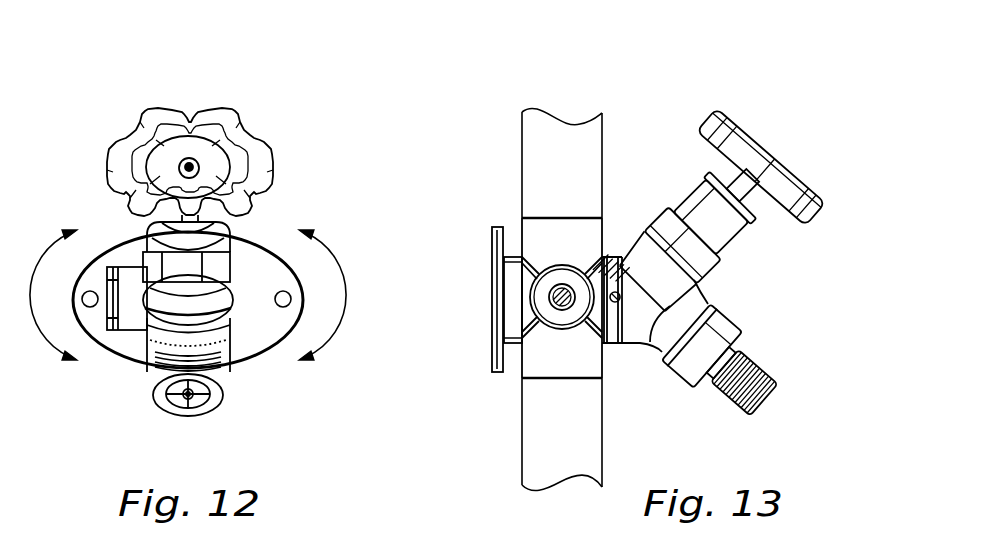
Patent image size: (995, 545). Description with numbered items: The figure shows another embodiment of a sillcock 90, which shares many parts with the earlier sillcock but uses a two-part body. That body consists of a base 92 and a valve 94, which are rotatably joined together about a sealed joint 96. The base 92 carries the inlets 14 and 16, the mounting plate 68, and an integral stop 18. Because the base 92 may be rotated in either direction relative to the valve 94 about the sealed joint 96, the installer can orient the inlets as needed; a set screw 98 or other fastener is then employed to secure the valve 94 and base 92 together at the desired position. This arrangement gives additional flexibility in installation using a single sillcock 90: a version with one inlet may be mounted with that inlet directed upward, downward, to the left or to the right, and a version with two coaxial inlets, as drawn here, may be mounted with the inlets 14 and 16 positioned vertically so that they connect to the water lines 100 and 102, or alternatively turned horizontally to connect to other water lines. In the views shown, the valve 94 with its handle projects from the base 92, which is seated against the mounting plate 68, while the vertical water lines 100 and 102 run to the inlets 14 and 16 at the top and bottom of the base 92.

In FIG. 12, the sillcock 90 is at (344, 86).
In FIG. 13, the sillcock 90 is at (746, 55).
In FIG. 12, the valve 94 is at (300, 177).
In FIG. 13, the valve 94 is at (817, 258).
In FIG. 12, the integral stop 18 is at (120, 240).
In FIG. 13, the integral stop 18 is at (533, 239).
In FIG. 12, the mounting plate 68 is at (247, 348).
In FIG. 13, the mounting plate 68 is at (495, 243).
In FIG. 12, the base 92 is at (91, 384).
In FIG. 13, the base 92 is at (471, 397).
In FIG. 13, the inlet 14 is at (542, 217).
In FIG. 13, the inlet 16 is at (572, 381).
In FIG. 13, the sealed joint 96 is at (613, 338).
In FIG. 13, the set screw 98 is at (617, 257).
In FIG. 13, the water line 100 is at (590, 153).
In FIG. 13, the water line 102 is at (533, 446).